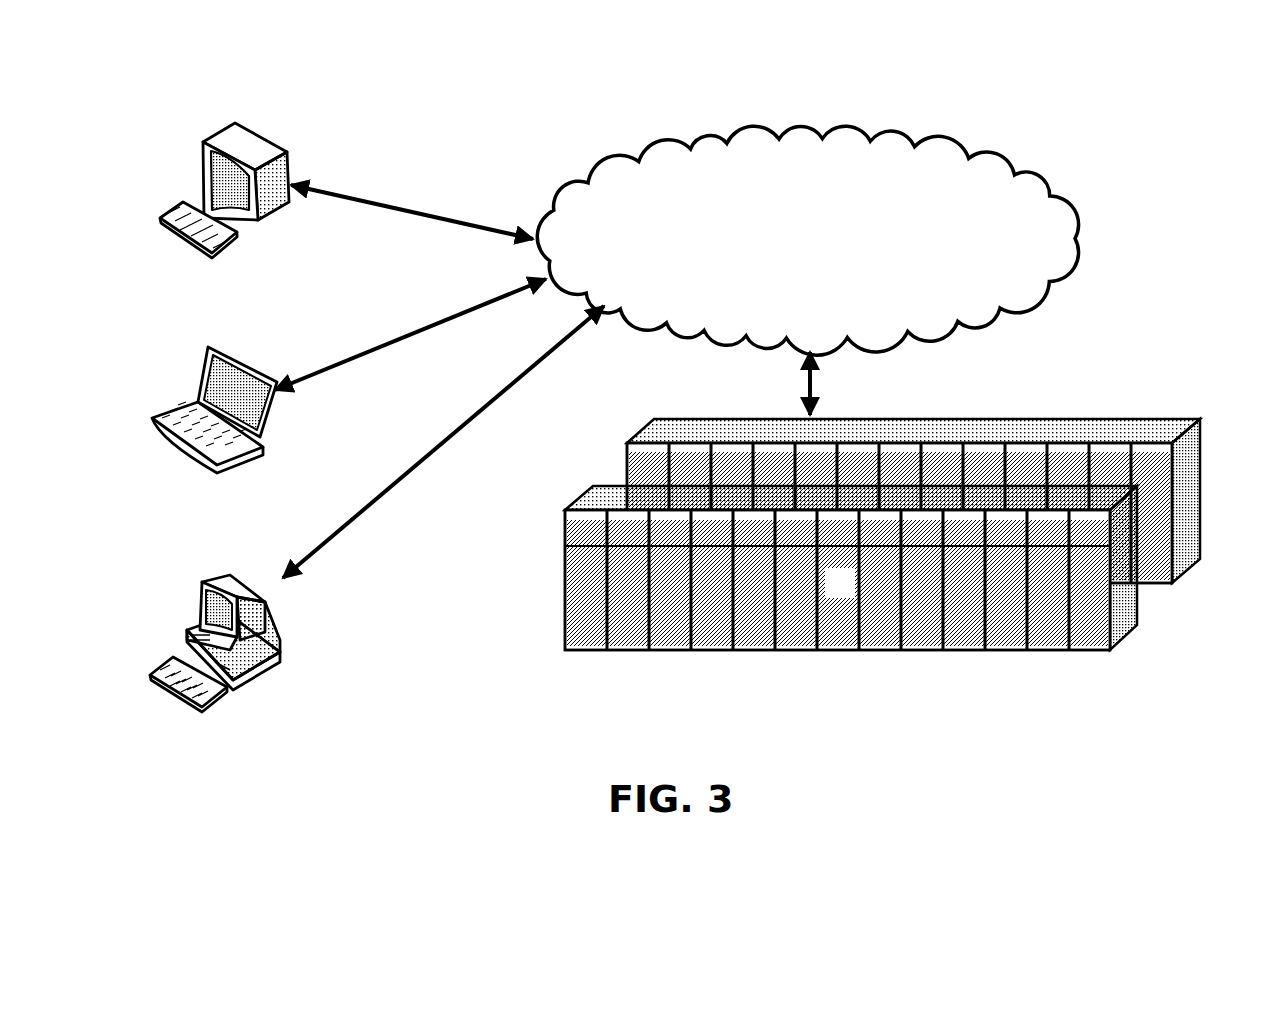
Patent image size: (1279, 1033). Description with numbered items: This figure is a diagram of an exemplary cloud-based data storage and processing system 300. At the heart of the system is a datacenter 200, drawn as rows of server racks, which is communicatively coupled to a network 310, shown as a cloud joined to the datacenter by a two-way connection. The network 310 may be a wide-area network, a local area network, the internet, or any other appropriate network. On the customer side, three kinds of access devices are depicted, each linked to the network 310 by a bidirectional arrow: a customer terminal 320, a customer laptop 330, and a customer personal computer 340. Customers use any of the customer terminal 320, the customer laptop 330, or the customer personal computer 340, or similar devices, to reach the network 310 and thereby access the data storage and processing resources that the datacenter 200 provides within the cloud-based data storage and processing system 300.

The datacenter 200 is at (1122, 620).
The cloud-based data storage and processing system 300 is at (1150, 159).
The network 310 is at (807, 240).
The customer terminal 320 is at (206, 160).
The customer laptop 330 is at (192, 407).
The customer personal computer 340 is at (200, 590).